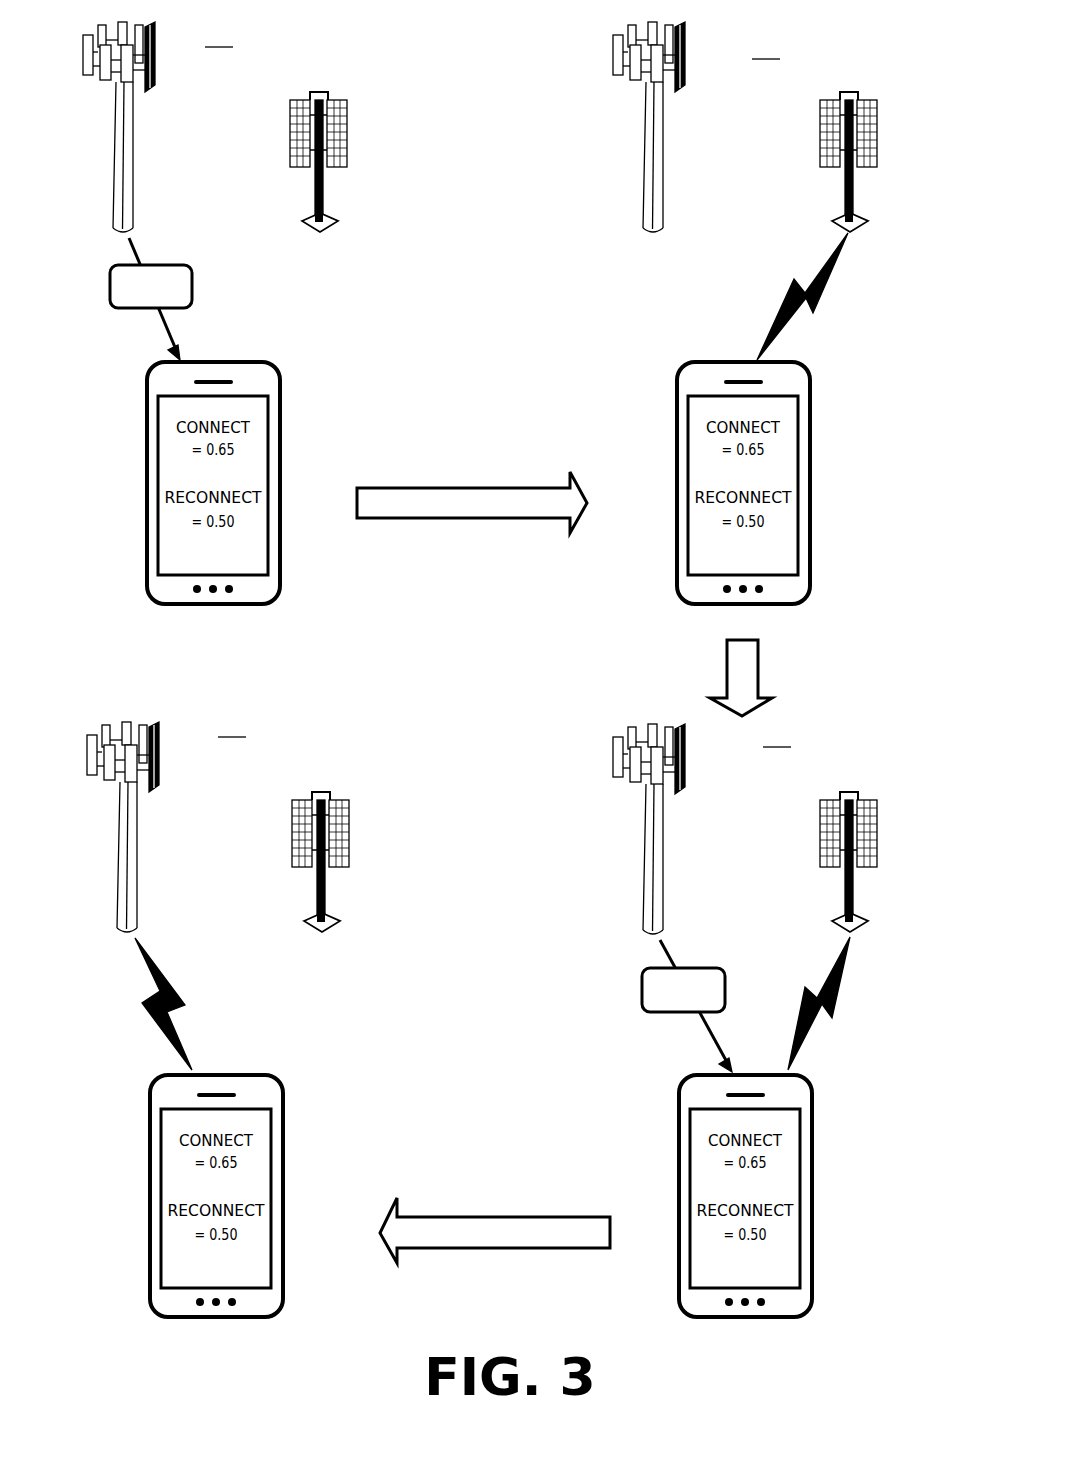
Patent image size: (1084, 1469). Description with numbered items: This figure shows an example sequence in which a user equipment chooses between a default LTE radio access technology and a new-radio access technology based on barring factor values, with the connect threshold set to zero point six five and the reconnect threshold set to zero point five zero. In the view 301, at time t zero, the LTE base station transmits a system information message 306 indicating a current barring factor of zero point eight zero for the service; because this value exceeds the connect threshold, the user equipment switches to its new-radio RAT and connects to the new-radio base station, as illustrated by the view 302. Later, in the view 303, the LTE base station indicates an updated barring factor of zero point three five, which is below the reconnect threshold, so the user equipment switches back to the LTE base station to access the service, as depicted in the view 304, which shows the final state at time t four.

The view 301 is at (350, 54).
The view 302 is at (860, 51).
The view 303 is at (856, 714).
The scenario at time t4 304 is at (346, 715).
The system information message 306 is at (192, 290).